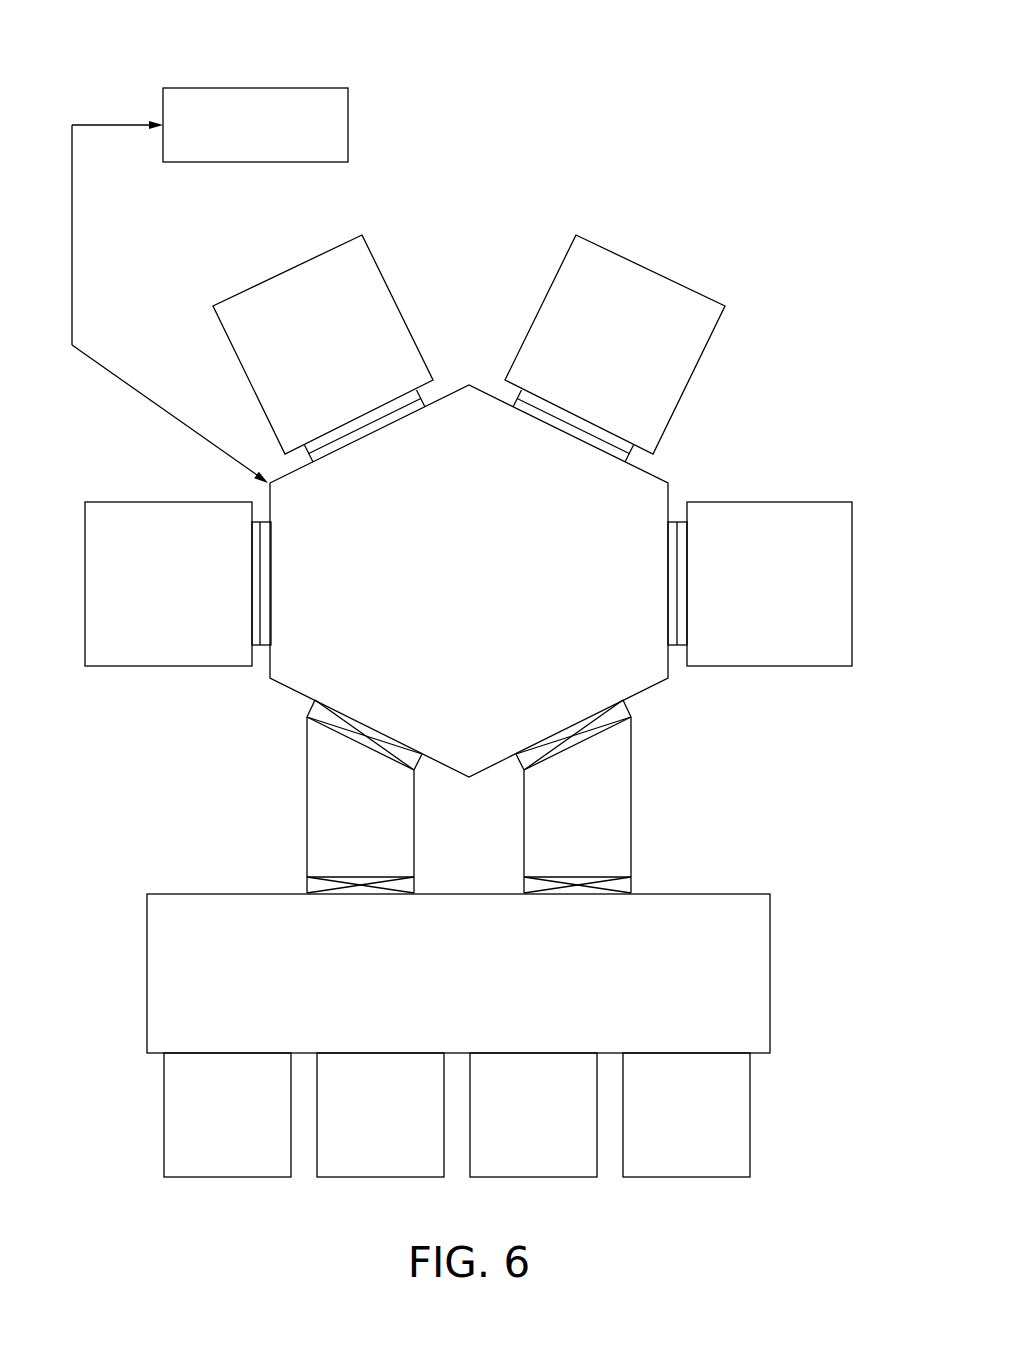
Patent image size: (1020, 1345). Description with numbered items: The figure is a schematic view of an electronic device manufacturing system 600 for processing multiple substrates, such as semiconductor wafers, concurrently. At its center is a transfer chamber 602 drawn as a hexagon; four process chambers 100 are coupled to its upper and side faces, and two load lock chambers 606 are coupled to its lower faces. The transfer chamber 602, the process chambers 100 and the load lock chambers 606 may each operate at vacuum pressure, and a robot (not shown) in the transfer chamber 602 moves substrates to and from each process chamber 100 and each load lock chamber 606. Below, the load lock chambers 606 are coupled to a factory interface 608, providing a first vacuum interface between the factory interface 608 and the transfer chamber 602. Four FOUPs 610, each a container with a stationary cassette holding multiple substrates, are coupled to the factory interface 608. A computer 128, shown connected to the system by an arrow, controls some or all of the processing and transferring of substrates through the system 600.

The process chamber 100 is at (305, 357).
The computer 128 is at (307, 88).
The electronic device manufacturing system 600 is at (649, 84).
The transfer chamber 602 is at (441, 597).
The load lock chamber 606 is at (332, 829).
The factory interface 608 is at (433, 992).
The FOUP 610 is at (202, 1129).